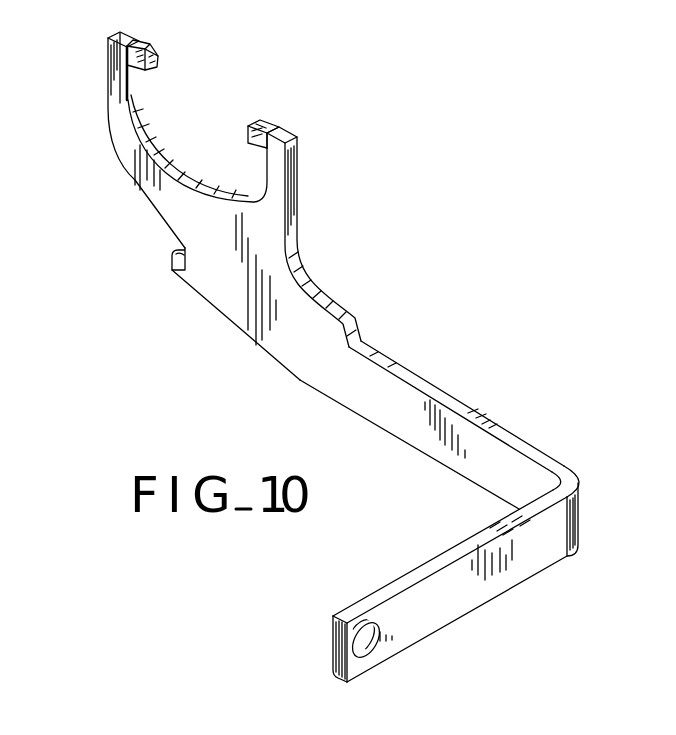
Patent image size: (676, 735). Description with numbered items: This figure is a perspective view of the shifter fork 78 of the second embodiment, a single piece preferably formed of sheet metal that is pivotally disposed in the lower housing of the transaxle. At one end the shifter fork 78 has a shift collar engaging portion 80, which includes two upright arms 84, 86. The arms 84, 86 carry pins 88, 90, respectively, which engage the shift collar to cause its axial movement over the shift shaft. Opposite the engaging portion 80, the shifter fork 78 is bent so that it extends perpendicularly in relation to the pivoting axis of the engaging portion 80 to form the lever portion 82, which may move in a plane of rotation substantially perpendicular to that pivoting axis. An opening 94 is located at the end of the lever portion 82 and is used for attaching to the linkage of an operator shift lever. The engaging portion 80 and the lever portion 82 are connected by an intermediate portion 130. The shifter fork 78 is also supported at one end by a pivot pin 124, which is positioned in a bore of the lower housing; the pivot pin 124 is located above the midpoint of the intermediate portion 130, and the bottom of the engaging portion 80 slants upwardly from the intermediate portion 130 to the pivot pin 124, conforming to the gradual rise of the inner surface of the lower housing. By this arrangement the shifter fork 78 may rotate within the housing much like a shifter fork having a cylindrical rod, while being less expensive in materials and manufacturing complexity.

The shifter fork 78 is at (349, 156).
The shift collar engaging portion 80 is at (197, 288).
The lever portion 82 is at (483, 577).
The arm 84 is at (117, 110).
The arm 86 is at (273, 194).
The pin 88 is at (157, 62).
The pin 90 is at (262, 118).
The opening 94 is at (372, 636).
The pivot pin 124 is at (172, 258).
The intermediate portion 130 is at (480, 420).